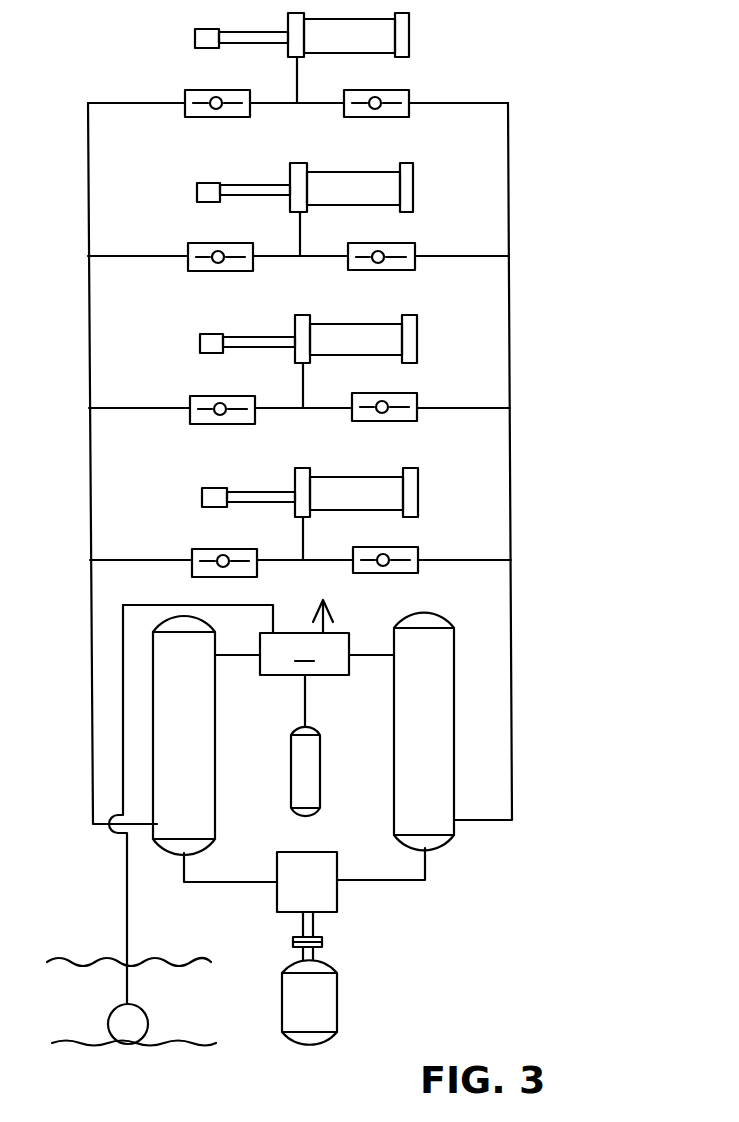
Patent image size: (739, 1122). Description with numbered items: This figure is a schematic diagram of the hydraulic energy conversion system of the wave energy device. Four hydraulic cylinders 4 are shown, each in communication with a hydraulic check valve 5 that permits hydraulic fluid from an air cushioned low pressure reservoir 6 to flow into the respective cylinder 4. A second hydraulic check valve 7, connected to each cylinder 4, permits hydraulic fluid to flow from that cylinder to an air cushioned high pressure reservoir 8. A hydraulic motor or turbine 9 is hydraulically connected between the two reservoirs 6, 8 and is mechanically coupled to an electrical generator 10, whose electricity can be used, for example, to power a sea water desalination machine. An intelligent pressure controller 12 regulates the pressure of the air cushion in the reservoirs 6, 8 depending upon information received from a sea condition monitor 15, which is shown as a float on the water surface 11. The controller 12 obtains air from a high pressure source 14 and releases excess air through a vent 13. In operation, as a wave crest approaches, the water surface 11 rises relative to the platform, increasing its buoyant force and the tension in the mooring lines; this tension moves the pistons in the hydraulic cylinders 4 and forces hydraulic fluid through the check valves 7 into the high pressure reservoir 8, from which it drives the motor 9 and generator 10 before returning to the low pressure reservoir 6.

The hydraulic cylinder 4 is at (410, 49).
The hydraulic check valve 5 is at (223, 117).
The hydraulic check valve 7 is at (372, 117).
The air cushioned low pressure reservoir 6 is at (213, 685).
The air cushioned high pressure reservoir 8 is at (394, 716).
The hydraulic motor or turbine 9 is at (338, 898).
The electrical generator 10 is at (338, 1007).
The water surface 11 is at (168, 962).
The intelligent pressure controller 12 is at (304, 654).
The vent 13 is at (333, 615).
The high pressure source 14 is at (320, 786).
The sea condition monitor 15 is at (148, 1020).